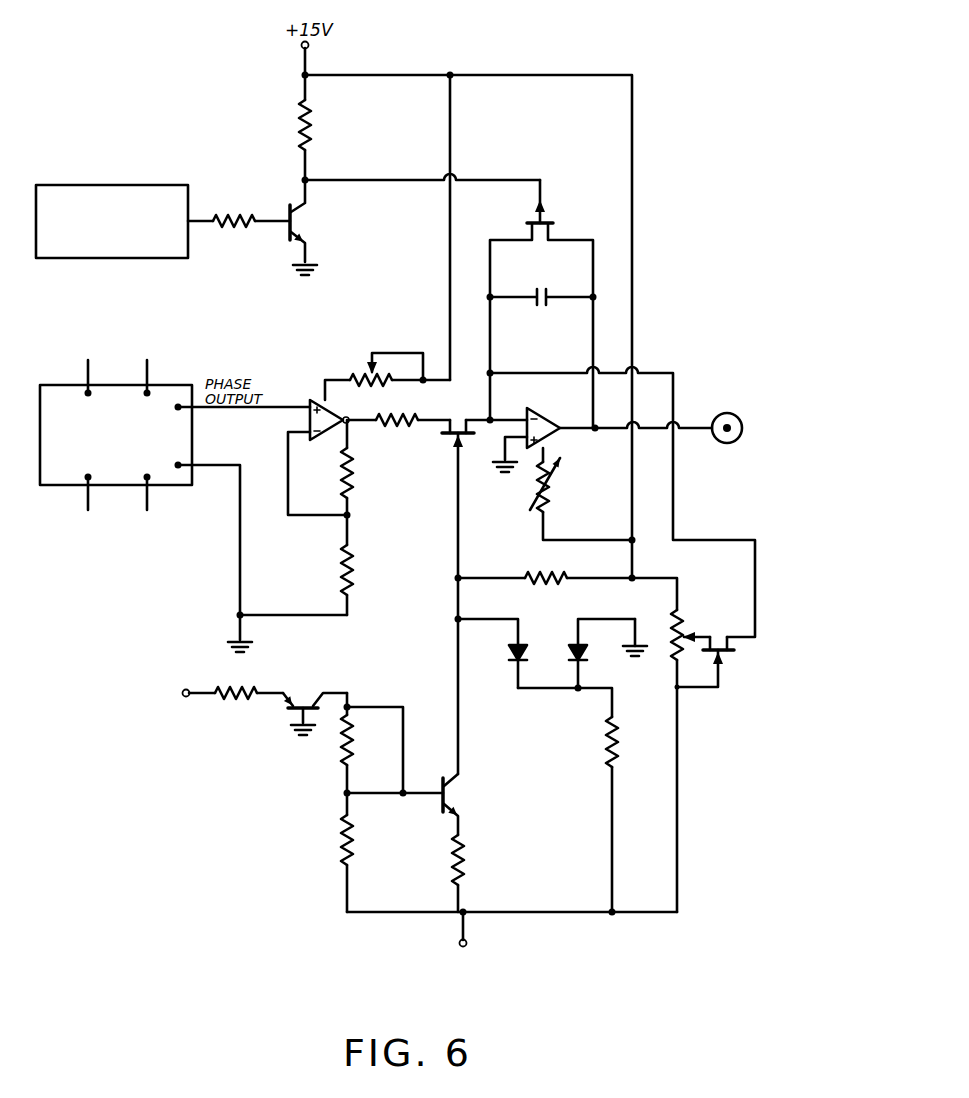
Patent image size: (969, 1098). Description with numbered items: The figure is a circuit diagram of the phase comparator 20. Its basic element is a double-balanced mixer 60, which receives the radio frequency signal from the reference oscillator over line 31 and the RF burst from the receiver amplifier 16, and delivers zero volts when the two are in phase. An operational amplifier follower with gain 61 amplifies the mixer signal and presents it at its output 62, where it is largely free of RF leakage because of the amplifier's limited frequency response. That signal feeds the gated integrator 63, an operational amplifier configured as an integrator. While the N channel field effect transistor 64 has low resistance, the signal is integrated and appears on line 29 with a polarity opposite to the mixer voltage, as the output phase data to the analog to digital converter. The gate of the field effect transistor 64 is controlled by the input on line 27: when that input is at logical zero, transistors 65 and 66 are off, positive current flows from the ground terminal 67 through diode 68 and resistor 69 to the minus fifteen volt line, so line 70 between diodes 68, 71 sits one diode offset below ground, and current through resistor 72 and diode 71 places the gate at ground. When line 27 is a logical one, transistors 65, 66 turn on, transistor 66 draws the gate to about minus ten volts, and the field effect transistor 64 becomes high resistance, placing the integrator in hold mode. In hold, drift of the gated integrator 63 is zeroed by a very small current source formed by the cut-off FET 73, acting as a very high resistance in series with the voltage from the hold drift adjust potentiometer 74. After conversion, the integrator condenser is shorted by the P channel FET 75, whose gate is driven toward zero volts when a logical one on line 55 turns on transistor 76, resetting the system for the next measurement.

The RF burst input from receiver amplifier 16 is at (88, 503).
The phase comparator 20 is at (246, 926).
The line 27 is at (150, 711).
The line 29 is at (722, 411).
The line 31 is at (147, 377).
The line 55 is at (204, 219).
The double-balanced mixer 60 is at (37, 472).
The operational amplifier follower with gain 61 is at (310, 396).
The output 62 is at (362, 423).
The gated integrator 63 is at (557, 393).
The N channel field effect transistor 64 is at (455, 438).
The transistor 65 is at (287, 714).
The transistor 66 is at (461, 794).
The ground terminal 67 is at (638, 662).
The diode 68 is at (576, 643).
The resistor 69 is at (608, 758).
The line 70 is at (544, 690).
The diode 71 is at (507, 654).
The resistor 72 is at (345, 755).
The cut-off FET 73 is at (729, 656).
The hold drift adjust potentiometer 74 is at (684, 622).
The P channel FET 75 is at (557, 233).
The transistor 76 is at (316, 226).